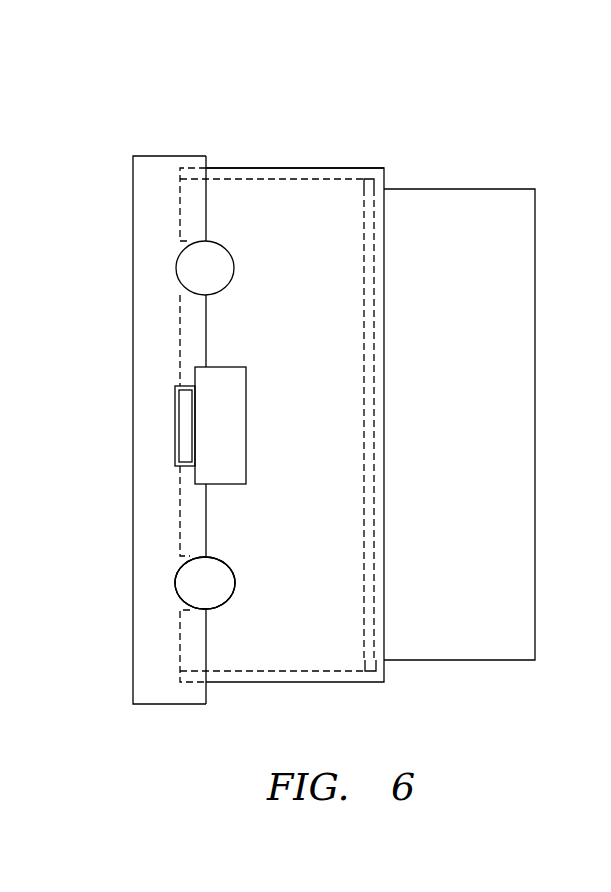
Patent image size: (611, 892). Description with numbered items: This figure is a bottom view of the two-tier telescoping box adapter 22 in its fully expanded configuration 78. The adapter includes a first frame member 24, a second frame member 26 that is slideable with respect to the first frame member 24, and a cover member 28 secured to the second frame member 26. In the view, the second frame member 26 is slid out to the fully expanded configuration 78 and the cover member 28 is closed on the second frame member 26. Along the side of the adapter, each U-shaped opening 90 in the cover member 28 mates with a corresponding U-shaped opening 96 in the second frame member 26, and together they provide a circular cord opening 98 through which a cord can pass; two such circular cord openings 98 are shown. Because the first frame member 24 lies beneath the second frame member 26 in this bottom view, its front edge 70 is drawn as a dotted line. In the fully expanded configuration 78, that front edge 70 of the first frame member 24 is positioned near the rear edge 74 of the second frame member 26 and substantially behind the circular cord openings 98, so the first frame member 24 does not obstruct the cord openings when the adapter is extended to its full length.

The two-tier telescoping box adapter 22 is at (259, 167).
The first frame member 24 is at (468, 242).
The second frame member 26 is at (302, 216).
The cover member 28 is at (173, 211).
The front edge 70 is at (367, 390).
The rear edge 74 is at (384, 232).
The fully expanded configuration 78 is at (328, 108).
The U-shaped opening 90 is at (170, 578).
The U-shaped opening 96 is at (240, 565).
The circular cord opening 98 is at (220, 268).